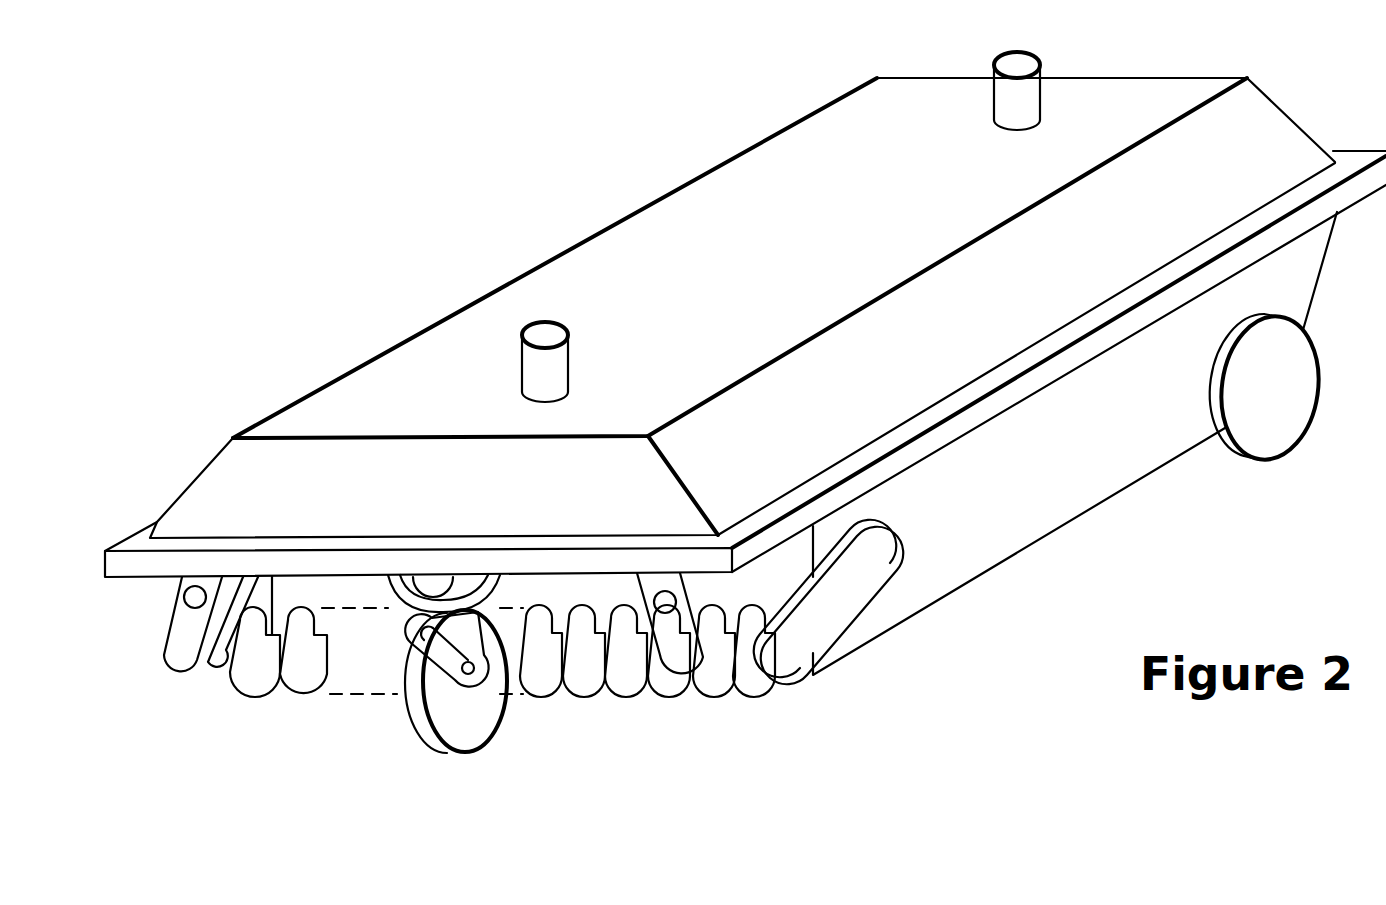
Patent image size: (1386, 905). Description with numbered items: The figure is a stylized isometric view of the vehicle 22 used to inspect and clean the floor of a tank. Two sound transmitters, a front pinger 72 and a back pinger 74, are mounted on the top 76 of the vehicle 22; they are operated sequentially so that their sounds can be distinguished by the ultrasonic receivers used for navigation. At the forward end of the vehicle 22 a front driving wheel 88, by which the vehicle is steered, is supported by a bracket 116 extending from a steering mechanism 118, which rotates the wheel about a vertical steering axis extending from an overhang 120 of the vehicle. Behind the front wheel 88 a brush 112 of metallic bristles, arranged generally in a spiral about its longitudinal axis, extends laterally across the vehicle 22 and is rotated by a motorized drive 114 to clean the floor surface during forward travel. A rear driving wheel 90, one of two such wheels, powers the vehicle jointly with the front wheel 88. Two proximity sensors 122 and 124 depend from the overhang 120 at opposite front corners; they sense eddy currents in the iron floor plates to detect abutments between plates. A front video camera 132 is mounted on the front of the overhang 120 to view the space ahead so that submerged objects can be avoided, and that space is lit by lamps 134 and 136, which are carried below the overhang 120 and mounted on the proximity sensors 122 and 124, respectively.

The vehicle 22 is at (1075, 443).
The front pinger 72 is at (577, 362).
The back pinger 74 is at (1008, 117).
The top 76 is at (768, 280).
The front driving wheel 88 is at (456, 709).
The rear driving wheel 90 is at (1298, 388).
The brush 112 is at (502, 697).
The motorized drive 114 is at (868, 602).
The bracket 116 is at (476, 710).
The steering mechanism 118 is at (413, 666).
The overhang 120 is at (742, 414).
The proximity sensor 122 is at (672, 658).
The proximity sensor 124 is at (221, 661).
The front video camera 132 is at (486, 525).
The lamp 134 is at (645, 549).
The lamp 136 is at (215, 549).